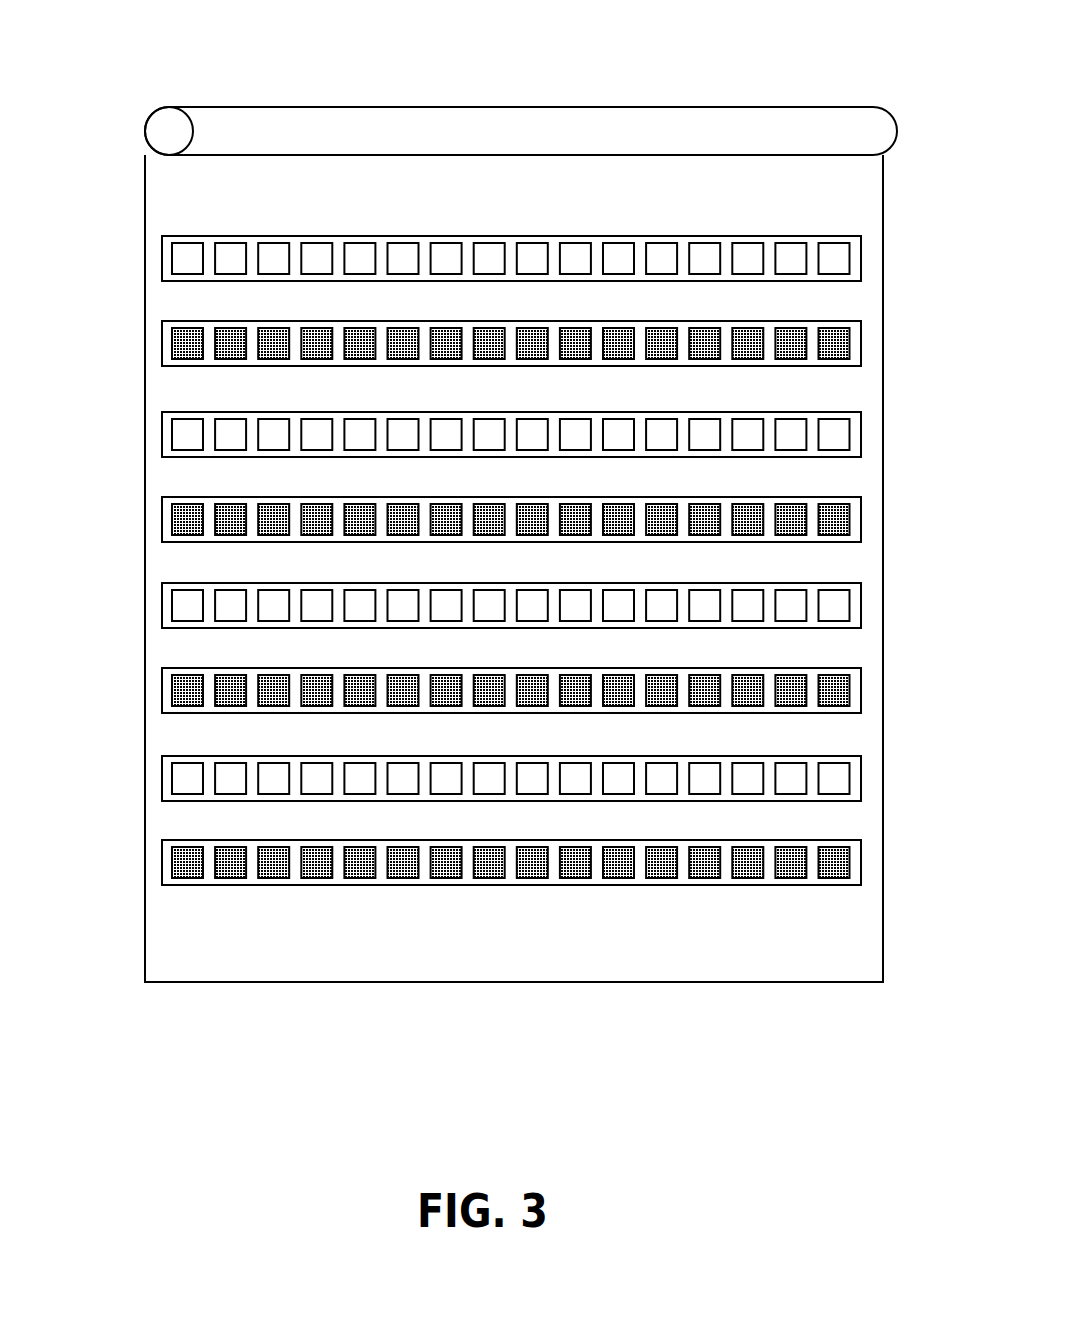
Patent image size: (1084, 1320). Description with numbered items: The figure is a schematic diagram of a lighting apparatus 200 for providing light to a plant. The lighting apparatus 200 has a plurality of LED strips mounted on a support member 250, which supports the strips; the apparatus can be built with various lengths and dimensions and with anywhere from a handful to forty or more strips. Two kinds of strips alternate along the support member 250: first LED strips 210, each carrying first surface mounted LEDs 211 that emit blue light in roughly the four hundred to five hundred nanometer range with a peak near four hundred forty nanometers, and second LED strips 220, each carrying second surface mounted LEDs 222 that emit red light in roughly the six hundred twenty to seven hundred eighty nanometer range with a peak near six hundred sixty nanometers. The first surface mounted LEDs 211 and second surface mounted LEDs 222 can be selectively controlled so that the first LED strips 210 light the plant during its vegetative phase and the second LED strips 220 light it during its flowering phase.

The lighting apparatus 200 is at (806, 61).
The support member 250 is at (175, 173).
The first LED strips 210 is at (862, 435).
The second LED strips 220 is at (862, 523).
The first surface mounted LEDs 211 is at (187, 604).
The second surface mounted LEDs 222 is at (173, 680).